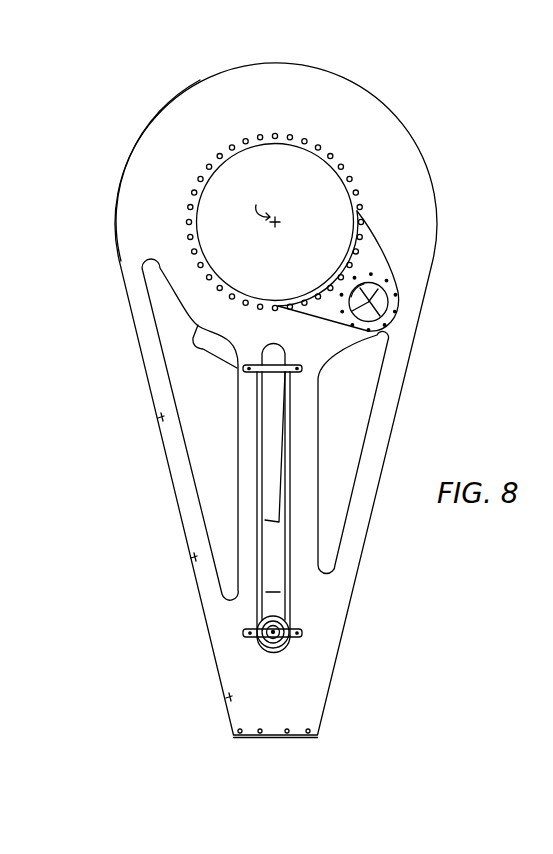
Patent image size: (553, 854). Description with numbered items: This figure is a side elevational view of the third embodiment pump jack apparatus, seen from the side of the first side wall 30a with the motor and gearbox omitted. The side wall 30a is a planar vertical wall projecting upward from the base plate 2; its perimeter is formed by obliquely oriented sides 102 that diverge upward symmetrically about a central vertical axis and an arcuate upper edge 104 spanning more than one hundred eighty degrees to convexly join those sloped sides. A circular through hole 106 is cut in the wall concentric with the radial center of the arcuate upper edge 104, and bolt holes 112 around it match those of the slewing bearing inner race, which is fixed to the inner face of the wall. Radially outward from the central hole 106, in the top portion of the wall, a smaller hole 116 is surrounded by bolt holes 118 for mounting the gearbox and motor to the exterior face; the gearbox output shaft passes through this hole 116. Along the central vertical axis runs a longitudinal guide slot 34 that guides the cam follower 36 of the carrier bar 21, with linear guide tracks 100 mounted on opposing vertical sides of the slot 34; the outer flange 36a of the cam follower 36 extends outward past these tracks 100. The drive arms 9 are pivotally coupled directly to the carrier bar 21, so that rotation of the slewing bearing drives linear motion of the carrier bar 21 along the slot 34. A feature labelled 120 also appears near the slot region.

The arcuate upper edge 104 is at (353, 82).
The base plate 2 is at (318, 735).
The side wall 30a is at (138, 243).
The circular through hole 106 is at (292, 144).
The bolt holes 112 is at (343, 167).
The bolt holes 118 is at (377, 273).
The smaller hole 116 is at (388, 302).
The obliquely oriented sides 102 is at (175, 498).
The stop tab 120 is at (213, 343).
The linear guide tracks 100 is at (305, 580).
The longitudinal guide slot 34 is at (274, 441).
The drive arms 9 is at (273, 592).
The cam follower 36 is at (286, 620).
The outer flange 36a is at (292, 636).
The carrier bar 21 is at (260, 643).